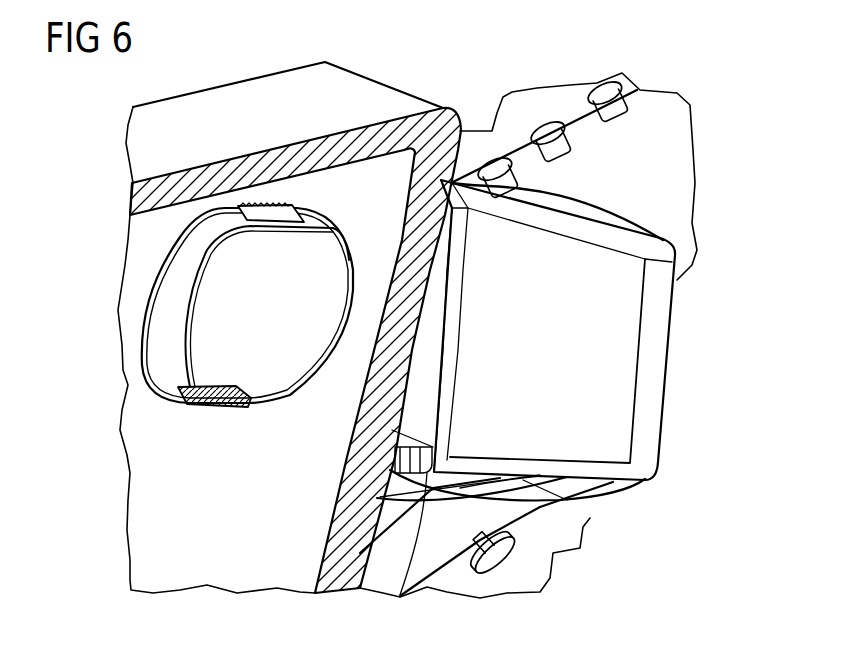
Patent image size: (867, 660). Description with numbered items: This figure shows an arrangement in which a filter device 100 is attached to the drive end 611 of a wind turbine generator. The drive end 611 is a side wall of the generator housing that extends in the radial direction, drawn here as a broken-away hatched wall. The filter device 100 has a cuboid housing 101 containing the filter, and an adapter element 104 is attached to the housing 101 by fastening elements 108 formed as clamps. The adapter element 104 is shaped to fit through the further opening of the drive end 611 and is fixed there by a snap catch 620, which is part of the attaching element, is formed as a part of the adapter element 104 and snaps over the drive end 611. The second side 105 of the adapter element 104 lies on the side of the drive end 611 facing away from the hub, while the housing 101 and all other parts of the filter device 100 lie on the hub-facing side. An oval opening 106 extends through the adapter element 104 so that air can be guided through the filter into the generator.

The filter device 100 is at (683, 304).
The housing 101 is at (657, 343).
The adapter element 104 is at (163, 330).
The second side 105 is at (153, 275).
The opening 106 is at (200, 317).
The fastening elements 108 is at (497, 217).
The drive end 611 is at (132, 423).
The snap catch 620 is at (268, 203).